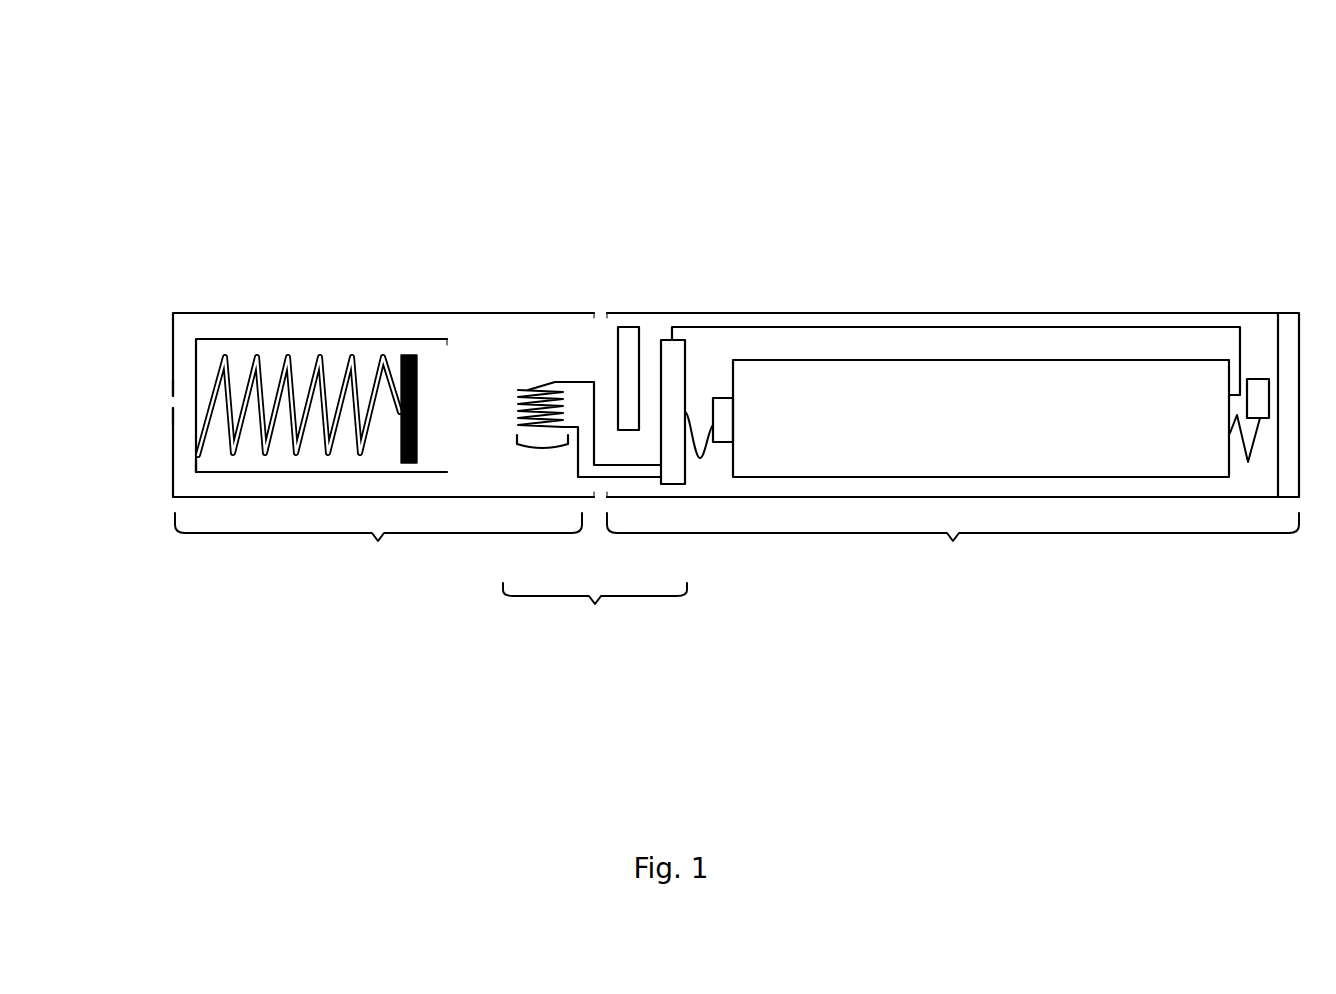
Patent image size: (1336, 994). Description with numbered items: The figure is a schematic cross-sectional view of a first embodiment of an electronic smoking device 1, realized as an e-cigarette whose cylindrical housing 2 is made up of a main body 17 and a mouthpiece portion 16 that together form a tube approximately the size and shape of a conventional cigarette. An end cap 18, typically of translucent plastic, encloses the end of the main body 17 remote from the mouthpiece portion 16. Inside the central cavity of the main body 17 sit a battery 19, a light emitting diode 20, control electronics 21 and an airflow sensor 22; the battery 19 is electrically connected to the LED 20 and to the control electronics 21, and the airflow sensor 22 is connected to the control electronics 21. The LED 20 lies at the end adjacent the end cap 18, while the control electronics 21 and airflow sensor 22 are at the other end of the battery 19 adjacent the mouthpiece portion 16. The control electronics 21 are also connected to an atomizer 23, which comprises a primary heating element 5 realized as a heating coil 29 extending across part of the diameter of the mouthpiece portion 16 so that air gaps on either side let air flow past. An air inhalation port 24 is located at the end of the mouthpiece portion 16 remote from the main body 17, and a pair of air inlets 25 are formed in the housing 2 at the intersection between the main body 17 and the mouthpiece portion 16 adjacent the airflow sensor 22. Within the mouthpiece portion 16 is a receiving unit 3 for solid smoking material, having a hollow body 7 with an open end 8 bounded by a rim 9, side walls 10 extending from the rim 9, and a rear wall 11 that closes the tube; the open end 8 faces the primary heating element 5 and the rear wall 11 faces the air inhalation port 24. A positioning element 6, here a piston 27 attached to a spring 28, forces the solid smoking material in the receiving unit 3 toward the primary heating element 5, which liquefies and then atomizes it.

The electronic smoking device 1 is at (170, 183).
The housing 2 is at (1205, 313).
The receiving unit 3 is at (246, 474).
The primary heating element 5 is at (540, 449).
The positioning element 6 is at (292, 352).
The hollow body 7 is at (372, 443).
The open end 8 is at (450, 386).
The rim 9 is at (444, 340).
The side walls 10 is at (367, 338).
The rear wall 11 is at (197, 470).
The mouthpiece portion 16 is at (378, 545).
The main body 17 is at (953, 452).
The end cap 18 is at (1290, 318).
The battery 19 is at (1073, 375).
The light emitting diode 20 is at (1258, 390).
The control electronics 21 is at (680, 486).
The airflow sensor 22 is at (632, 338).
The atomizer 23 is at (595, 611).
The air inhalation port 24 is at (175, 405).
The air inlets 25 is at (600, 305).
The piston 27 is at (413, 464).
The spring 28 is at (233, 352).
The heating coil 29 is at (537, 388).